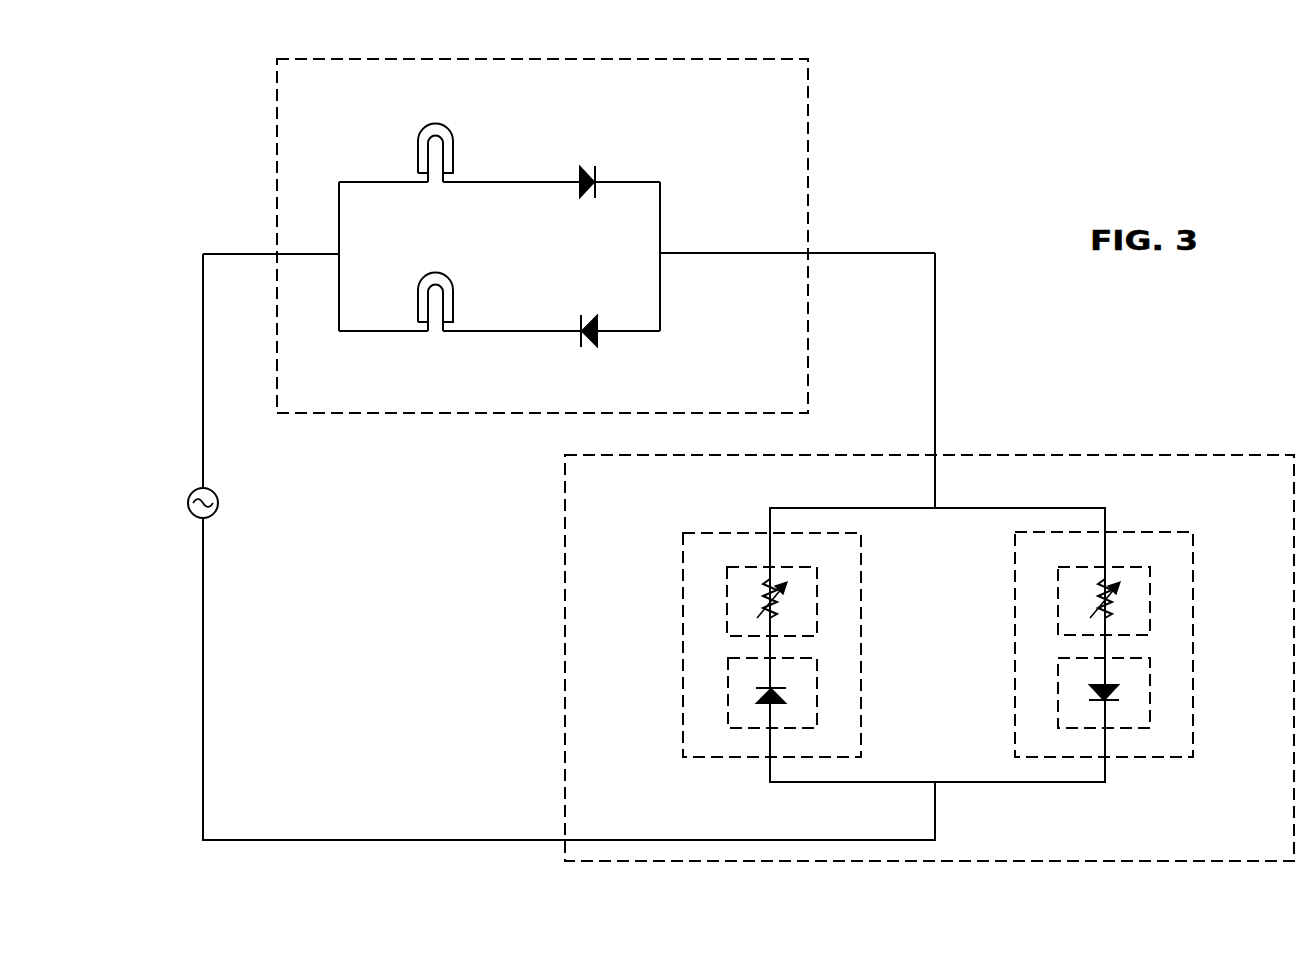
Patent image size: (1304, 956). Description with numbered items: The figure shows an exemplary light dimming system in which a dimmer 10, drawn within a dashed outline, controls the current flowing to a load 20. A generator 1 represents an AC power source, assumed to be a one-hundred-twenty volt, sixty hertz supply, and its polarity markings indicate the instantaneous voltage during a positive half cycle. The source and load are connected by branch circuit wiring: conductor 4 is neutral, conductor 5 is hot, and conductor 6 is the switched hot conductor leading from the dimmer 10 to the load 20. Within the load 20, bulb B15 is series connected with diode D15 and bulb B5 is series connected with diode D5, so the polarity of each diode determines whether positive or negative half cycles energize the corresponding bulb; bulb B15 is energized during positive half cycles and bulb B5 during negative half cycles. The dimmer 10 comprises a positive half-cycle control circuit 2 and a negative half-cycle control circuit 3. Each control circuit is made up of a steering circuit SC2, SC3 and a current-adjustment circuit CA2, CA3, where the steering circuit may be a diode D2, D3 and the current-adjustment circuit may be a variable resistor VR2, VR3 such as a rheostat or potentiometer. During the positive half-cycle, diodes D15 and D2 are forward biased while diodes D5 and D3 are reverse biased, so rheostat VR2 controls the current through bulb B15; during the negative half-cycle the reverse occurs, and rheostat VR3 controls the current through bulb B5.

The generator 1 is at (188, 503).
The positive half-cycle control circuit 2 is at (1015, 559).
The negative half-cycle control circuit 3 is at (683, 560).
The conductor 4 is at (203, 333).
The conductor 5 is at (203, 622).
The conductor 6 is at (935, 316).
The dimmer 10 is at (565, 556).
The load 20 is at (478, 58).
The bulb B15 is at (426, 127).
The bulb B5 is at (428, 276).
The diode D15 is at (582, 167).
The diode D5 is at (584, 317).
The current-adjustment circuit CA3 is at (727, 618).
The steering circuit SC3 is at (728, 693).
The variable resistor VR3 is at (773, 613).
The diode D3 is at (783, 698).
The current-adjustment circuit CA2 is at (1058, 618).
The steering circuit SC2 is at (1058, 690).
The variable resistor VR2 is at (1108, 610).
The diode D2 is at (1118, 694).